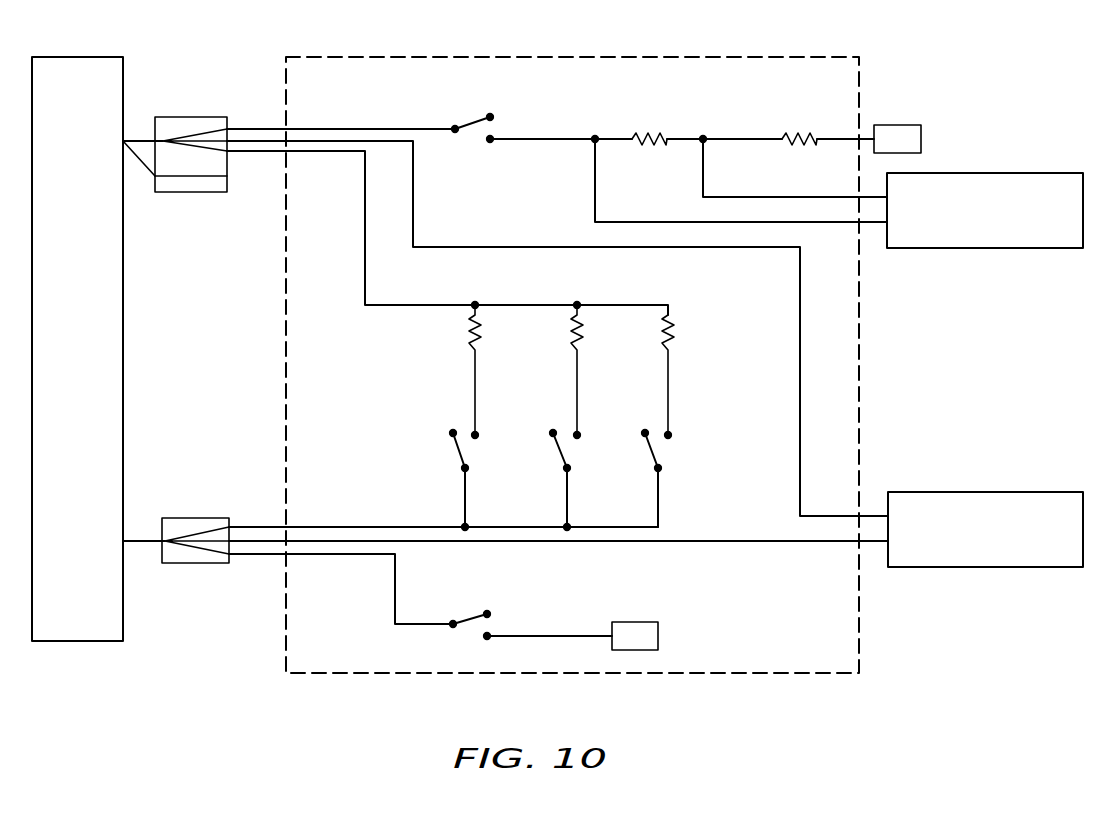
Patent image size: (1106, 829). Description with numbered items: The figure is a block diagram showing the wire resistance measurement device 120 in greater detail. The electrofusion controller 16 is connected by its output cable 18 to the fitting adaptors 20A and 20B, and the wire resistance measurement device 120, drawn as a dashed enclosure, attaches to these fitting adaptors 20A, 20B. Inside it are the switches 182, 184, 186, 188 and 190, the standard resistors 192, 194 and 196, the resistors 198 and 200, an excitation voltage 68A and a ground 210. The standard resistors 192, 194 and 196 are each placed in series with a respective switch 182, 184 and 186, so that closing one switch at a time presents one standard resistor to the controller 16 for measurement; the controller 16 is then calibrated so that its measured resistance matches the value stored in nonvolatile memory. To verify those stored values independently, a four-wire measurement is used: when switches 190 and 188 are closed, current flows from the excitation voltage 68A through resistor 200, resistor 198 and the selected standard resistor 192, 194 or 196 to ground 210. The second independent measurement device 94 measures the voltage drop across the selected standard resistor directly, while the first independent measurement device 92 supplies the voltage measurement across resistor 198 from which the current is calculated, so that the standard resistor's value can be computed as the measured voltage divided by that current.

The electrofusion controller 16 is at (96, 390).
The output cable 18 is at (123, 141).
The fitting adaptor 20A is at (173, 192).
The fitting adaptor 20B is at (180, 518).
The wire resistance measurement device 120 is at (853, 43).
The switch 190 is at (470, 123).
The resistor 198 is at (652, 132).
The resistor 200 is at (790, 133).
The excitation voltage 68A is at (921, 137).
The first independent measurement device 92 is at (970, 248).
The second independent measurement device 94 is at (972, 567).
The standard resistor 192 is at (480, 340).
The standard resistor 194 is at (582, 340).
The standard resistor 196 is at (673, 340).
The switch 182 is at (458, 456).
The switch 184 is at (560, 456).
The switch 186 is at (651, 456).
The switch 188 is at (466, 618).
The ground 210 is at (637, 622).